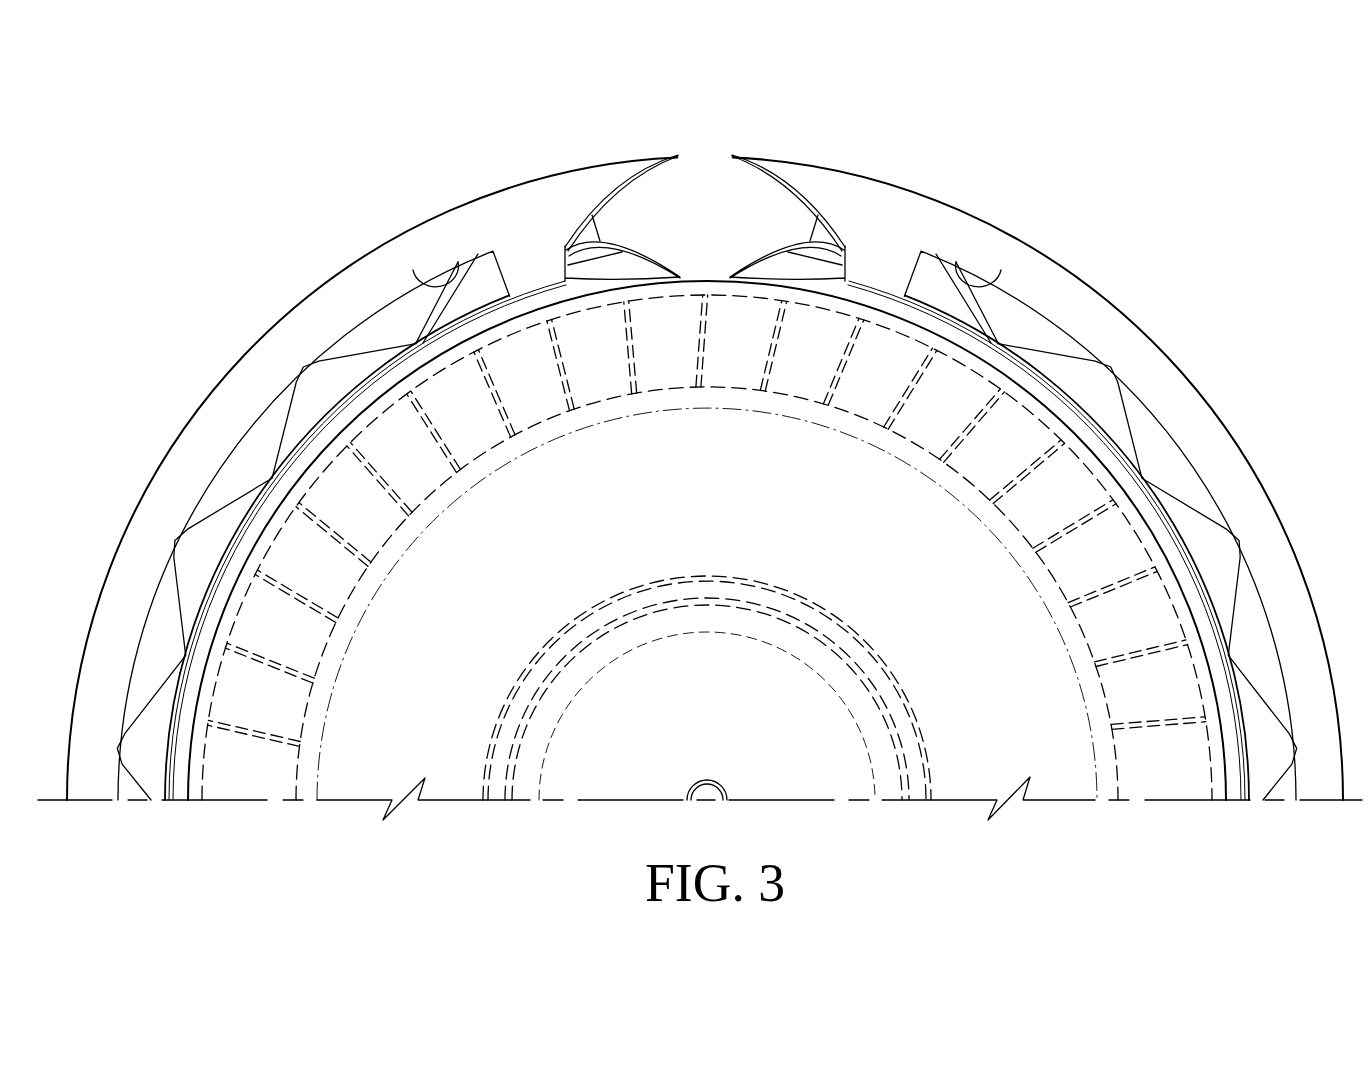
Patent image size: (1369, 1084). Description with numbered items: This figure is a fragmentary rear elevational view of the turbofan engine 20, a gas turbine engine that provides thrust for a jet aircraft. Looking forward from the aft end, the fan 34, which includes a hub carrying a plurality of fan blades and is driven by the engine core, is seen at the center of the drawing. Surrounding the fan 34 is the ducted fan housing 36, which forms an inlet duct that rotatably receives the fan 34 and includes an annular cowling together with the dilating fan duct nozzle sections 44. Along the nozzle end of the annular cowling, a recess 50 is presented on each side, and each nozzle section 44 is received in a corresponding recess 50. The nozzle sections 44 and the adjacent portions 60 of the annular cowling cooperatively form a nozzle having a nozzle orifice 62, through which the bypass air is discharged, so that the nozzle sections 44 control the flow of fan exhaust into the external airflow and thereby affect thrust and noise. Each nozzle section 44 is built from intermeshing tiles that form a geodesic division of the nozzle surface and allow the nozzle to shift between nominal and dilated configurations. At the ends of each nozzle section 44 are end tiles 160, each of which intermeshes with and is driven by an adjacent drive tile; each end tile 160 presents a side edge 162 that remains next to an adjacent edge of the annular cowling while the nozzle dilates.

The turbofan engine 20 is at (1232, 168).
The fan 34 is at (1018, 516).
The ducted fan housing 36 is at (1213, 446).
The dilating fan duct nozzle section 44 is at (1027, 318).
The recess 50 is at (413, 270).
The adjacent portion of the annular cowling 60 is at (537, 260).
The nozzle orifice 62 is at (1236, 787).
The end tile 160 is at (490, 272).
The side edge 162 is at (920, 272).